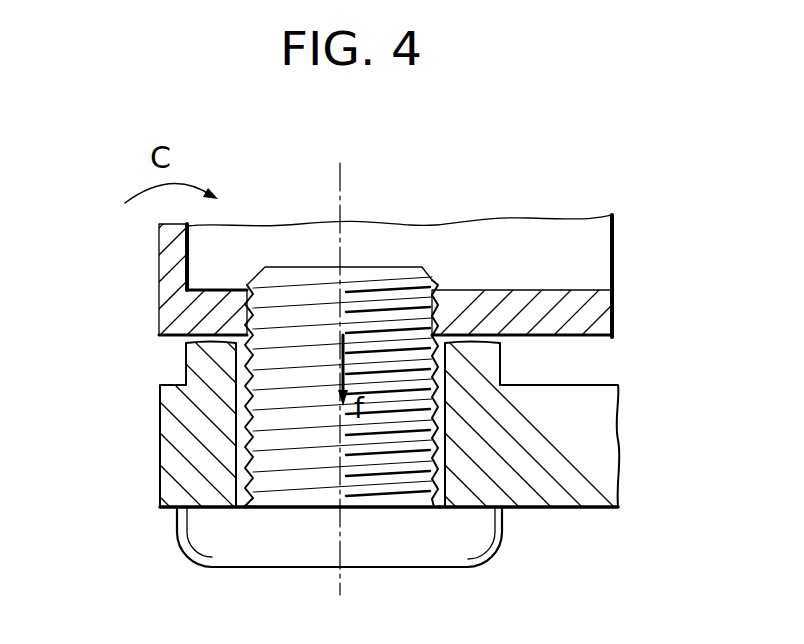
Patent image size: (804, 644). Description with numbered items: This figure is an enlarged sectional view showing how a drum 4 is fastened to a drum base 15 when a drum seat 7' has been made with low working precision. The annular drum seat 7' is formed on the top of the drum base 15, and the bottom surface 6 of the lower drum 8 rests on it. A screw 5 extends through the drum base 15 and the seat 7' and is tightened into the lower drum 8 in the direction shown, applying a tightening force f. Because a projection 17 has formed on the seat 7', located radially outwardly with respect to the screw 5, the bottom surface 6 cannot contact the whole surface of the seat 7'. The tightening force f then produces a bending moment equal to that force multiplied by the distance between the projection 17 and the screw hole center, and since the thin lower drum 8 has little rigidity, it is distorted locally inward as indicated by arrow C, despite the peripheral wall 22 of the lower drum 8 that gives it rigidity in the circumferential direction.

The drum 4 is at (514, 213).
The lower drum 8 is at (588, 263).
The peripheral wall 22 is at (170, 258).
The bottom surface 6 is at (572, 339).
The drum base 15 is at (183, 447).
The projection 17 is at (170, 350).
The drum seat 7' is at (348, 417).
The screw 5 is at (437, 547).